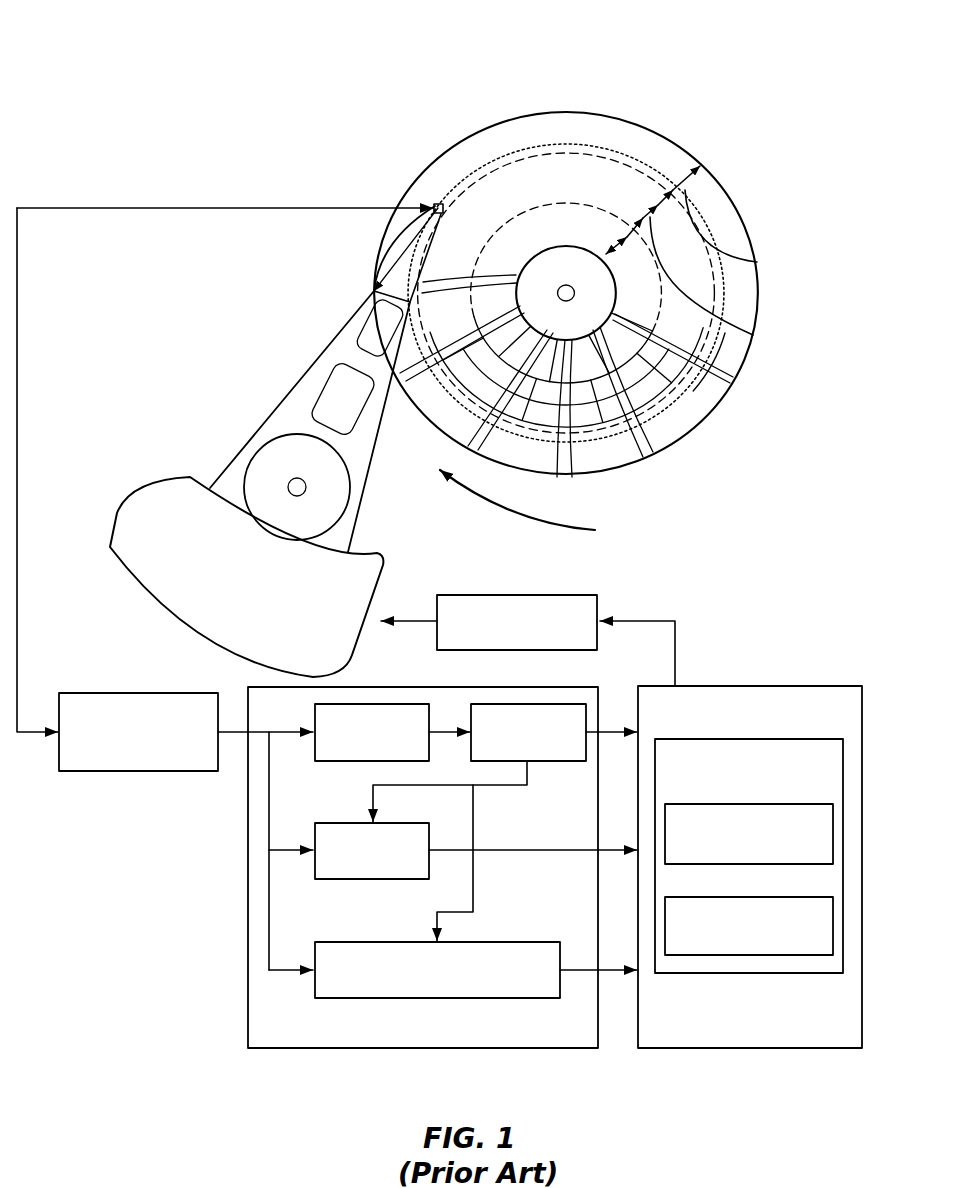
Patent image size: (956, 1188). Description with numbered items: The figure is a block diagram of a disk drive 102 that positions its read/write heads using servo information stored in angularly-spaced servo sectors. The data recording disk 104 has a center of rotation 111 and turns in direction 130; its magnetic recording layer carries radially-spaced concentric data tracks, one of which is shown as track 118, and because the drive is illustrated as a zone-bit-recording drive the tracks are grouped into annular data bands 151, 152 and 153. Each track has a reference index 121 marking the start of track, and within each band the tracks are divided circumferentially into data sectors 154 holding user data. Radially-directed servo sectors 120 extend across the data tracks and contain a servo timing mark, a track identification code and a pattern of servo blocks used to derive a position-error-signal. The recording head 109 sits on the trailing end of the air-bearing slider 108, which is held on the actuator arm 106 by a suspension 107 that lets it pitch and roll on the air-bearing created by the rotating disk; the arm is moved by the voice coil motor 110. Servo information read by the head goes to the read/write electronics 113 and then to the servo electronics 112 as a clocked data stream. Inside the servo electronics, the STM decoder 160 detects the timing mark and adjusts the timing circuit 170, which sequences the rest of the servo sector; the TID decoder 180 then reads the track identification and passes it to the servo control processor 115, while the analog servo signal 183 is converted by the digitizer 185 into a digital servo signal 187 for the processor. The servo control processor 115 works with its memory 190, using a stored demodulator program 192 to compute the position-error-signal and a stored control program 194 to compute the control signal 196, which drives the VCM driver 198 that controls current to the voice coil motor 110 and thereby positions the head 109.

The disk drive 102 is at (126, 40).
The data recording disk 104 is at (523, 112).
The actuator arm 106 is at (356, 316).
The suspension 107 is at (405, 263).
The air-bearing slider 108 is at (440, 205).
The data recording transducer 109 is at (441, 205).
The voice coil motor 110 is at (177, 477).
The center of rotation 111 is at (566, 285).
The servo electronics 112 is at (247, 836).
The read/write electronics 113 is at (115, 693).
The servo control processor 115 is at (785, 686).
The data track 118 is at (452, 157).
The servo sectors 120 is at (470, 445).
The reference index 121 is at (729, 383).
The direction of rotation 130 is at (542, 513).
The data band 151 is at (757, 262).
The data band 152 is at (755, 335).
The data band 153 is at (605, 240).
The data sectors 154 is at (700, 404).
The STM decoder 160 is at (337, 761).
The timing circuit 170 is at (533, 761).
The track identification decoder 180 is at (337, 879).
The analog servo signal 183 is at (268, 878).
The digitizer 185 is at (315, 982).
The digital servo signal 187 is at (612, 975).
The memory 190 is at (773, 739).
The demodulator program 192 is at (748, 803).
The control program 194 is at (752, 897).
The control signal 196 is at (677, 648).
The VCM driver 198 is at (533, 595).